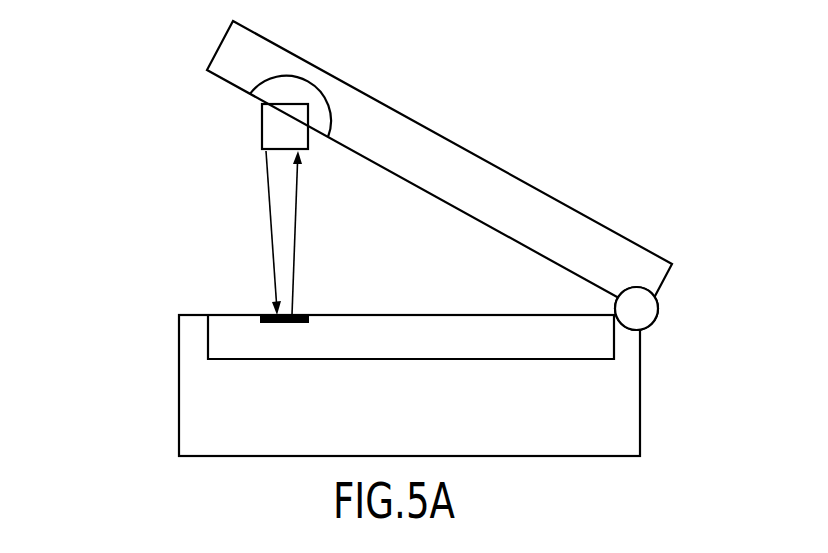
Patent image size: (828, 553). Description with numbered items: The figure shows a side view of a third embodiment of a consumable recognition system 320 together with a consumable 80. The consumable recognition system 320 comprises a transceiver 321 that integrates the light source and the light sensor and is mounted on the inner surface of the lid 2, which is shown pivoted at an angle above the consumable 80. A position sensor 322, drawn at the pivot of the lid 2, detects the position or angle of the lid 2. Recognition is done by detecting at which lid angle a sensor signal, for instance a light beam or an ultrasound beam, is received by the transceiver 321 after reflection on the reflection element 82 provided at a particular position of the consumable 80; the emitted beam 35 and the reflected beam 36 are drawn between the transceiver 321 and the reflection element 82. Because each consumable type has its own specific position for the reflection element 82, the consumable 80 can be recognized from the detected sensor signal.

The lid 2 is at (220, 45).
The consumable recognition system 320 is at (390, 175).
The transceiver 321 is at (262, 142).
The position sensor 322 is at (658, 308).
The emitted light beam 35 is at (270, 232).
The reflected light beam 36 is at (297, 235).
The consumable 80 is at (208, 347).
The reflection element 82 is at (300, 316).